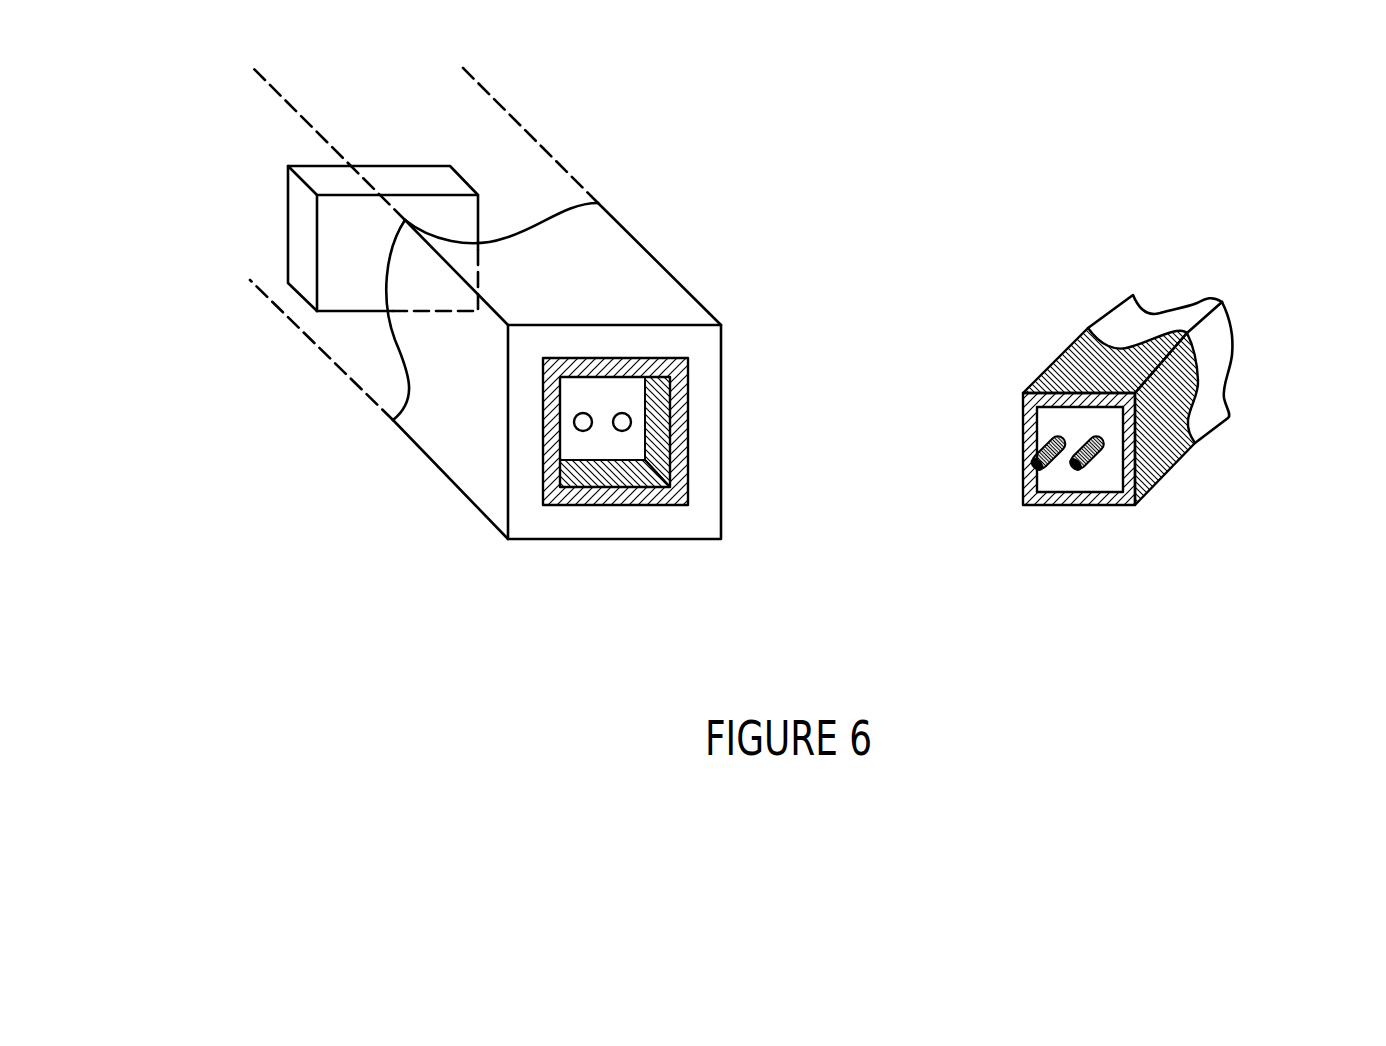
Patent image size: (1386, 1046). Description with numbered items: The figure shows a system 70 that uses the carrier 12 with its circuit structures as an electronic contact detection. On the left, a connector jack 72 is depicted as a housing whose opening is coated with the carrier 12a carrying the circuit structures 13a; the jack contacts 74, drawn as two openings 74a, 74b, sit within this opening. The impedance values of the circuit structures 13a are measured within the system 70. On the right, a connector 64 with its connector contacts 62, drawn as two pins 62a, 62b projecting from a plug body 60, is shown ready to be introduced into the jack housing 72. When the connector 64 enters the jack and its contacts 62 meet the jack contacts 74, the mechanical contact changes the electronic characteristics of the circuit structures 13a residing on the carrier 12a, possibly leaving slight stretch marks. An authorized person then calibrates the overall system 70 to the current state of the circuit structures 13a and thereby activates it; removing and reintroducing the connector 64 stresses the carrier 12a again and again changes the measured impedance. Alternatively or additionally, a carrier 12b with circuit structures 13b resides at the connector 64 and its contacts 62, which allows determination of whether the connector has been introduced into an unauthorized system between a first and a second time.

The carrier 12 is at (935, 617).
The carrier 12a is at (688, 517).
The carrier 12b is at (1032, 518).
The circuit structures 13a is at (660, 437).
The circuit structures 13b is at (1023, 437).
The plug housing 60 is at (1063, 389).
The connector contacts 62 is at (1076, 538).
The first plug contact pin 62a is at (1060, 467).
The second plug contact pin 62b is at (1097, 467).
The connector 64 is at (1233, 342).
The system 70 is at (681, 243).
The connector jack 72 is at (527, 514).
The jack contacts 74 is at (601, 536).
The first receptacle contact 74a is at (583, 431).
The second receptacle contact 74b is at (622, 431).